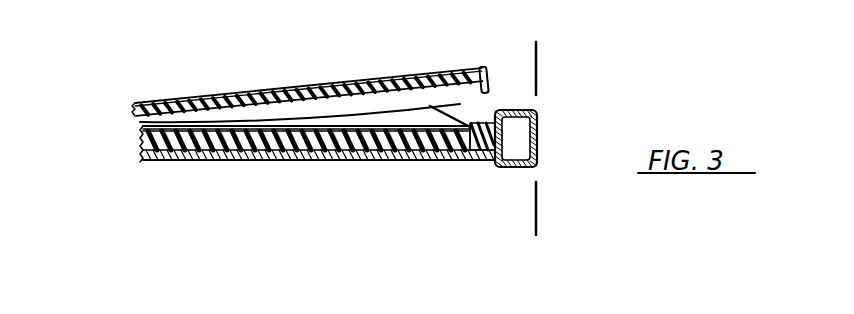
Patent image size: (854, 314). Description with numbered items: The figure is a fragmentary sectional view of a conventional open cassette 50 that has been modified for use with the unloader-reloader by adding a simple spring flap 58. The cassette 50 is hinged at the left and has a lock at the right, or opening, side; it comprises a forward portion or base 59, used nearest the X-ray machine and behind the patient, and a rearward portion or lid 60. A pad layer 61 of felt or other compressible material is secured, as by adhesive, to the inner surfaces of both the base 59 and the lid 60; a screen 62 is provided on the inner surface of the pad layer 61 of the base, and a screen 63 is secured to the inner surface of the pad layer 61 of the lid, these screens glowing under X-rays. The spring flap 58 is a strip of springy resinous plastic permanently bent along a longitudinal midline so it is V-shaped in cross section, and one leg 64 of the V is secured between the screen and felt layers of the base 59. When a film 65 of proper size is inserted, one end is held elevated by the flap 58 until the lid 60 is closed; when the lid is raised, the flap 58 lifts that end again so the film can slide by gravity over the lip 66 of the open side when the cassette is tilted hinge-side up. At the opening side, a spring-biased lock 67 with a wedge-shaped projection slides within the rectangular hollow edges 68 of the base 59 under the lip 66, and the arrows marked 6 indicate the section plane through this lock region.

The cassette 50 is at (142, 158).
The spring flap 58 is at (474, 123).
The forward portion (base) 59 is at (465, 155).
The rearward portion (lid) 60 is at (404, 78).
The pad layer 61 is at (335, 83).
The screen 62 is at (268, 123).
The screen 63 is at (312, 148).
The leg 64 is at (447, 152).
The film 65 is at (265, 92).
The lip 66 is at (515, 110).
The lock 67 is at (515, 135).
The rectangular hollow edges 68 is at (537, 161).
The section line 6- 6 is at (540, 54).